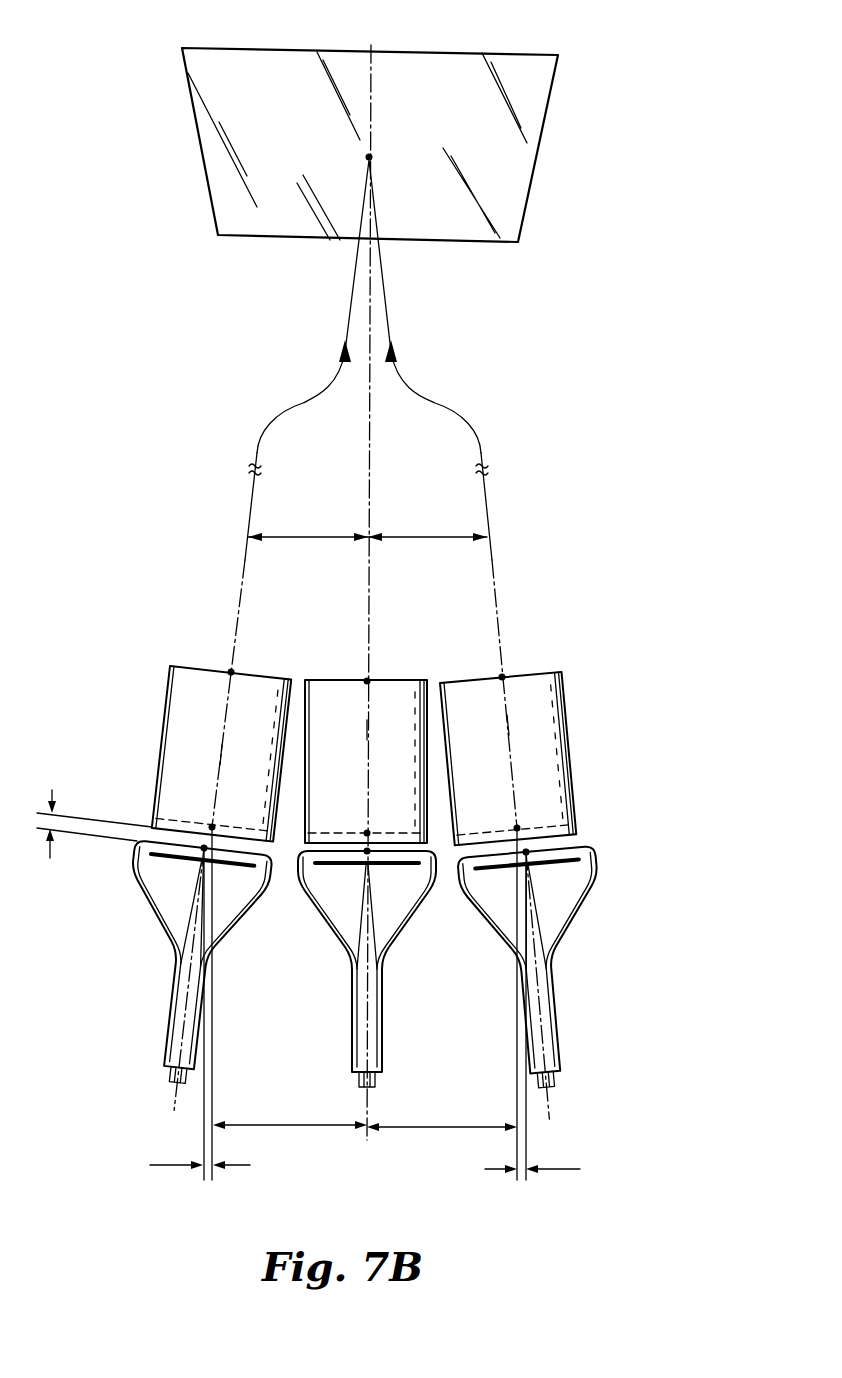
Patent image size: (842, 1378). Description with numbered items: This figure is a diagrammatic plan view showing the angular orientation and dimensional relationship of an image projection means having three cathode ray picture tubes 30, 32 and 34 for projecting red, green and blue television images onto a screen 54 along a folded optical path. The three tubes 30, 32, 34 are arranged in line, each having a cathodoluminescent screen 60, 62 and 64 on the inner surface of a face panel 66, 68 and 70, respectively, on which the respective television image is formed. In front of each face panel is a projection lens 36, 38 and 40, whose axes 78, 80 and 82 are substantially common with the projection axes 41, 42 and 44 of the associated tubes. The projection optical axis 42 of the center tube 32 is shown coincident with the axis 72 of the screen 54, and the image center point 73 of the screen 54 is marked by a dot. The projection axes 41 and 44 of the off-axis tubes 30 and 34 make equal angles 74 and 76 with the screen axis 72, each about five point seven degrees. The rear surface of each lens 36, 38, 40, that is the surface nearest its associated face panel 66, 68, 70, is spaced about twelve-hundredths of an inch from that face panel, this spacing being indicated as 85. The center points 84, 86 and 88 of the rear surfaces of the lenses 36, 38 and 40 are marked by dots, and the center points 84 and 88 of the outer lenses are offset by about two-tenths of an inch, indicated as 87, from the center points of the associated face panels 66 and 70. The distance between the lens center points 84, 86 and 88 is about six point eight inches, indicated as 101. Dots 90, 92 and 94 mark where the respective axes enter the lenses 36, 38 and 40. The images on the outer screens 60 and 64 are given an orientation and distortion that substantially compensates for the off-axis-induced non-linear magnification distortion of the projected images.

The cathode ray tube 30 is at (167, 977).
The cathode ray tube 32 is at (344, 971).
The cathode ray tube 34 is at (529, 983).
The projection lens 36 is at (167, 695).
The projection lens 38 is at (432, 688).
The projection lens 40 is at (568, 750).
The projection axis 41 is at (170, 1097).
The projection optical axis 42 is at (365, 1103).
The projection axis 44 is at (553, 1105).
The screen 54 is at (200, 147).
The cathodoluminescent screen 60 is at (182, 860).
The cathodoluminescent screen 62 is at (343, 865).
The cathodoluminescent screen 64 is at (500, 862).
The face panel 66 is at (145, 848).
The face panel 68 is at (302, 840).
The face panel 70 is at (452, 897).
The axis of screen 72 is at (367, 403).
The image center point 73 is at (354, 149).
The angle 74 is at (303, 537).
The angle 76 is at (423, 537).
The lens axis 78 is at (218, 735).
The lens axis 80 is at (367, 715).
The lens axis 82 is at (505, 705).
The center point 84 is at (196, 818).
The lens-to-face-panel spacing 85 is at (52, 790).
The center point 86 is at (356, 816).
The offset 87 is at (361, 1003).
The center point 88 is at (506, 813).
The left plate axis entry point 90 is at (219, 658).
The center plate axis entry point 92 is at (381, 668).
The right plate axis entry point 94 is at (515, 662).
The distance between lens center points 101 is at (290, 1126).